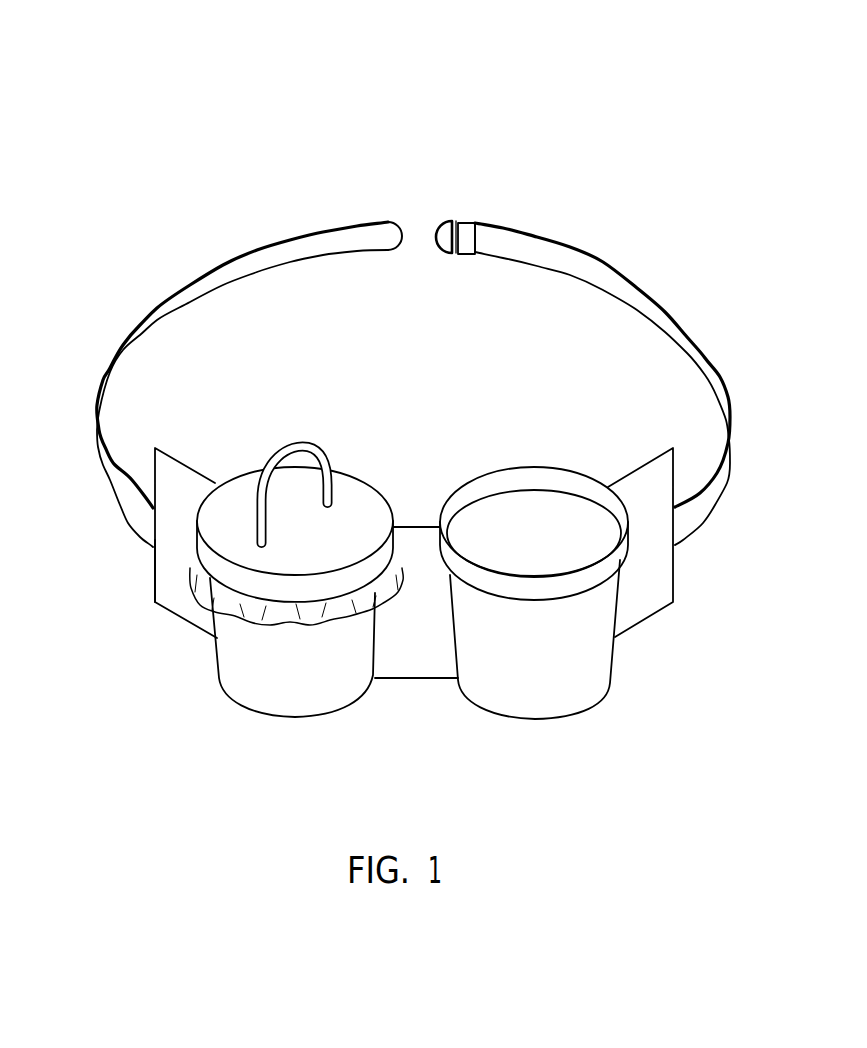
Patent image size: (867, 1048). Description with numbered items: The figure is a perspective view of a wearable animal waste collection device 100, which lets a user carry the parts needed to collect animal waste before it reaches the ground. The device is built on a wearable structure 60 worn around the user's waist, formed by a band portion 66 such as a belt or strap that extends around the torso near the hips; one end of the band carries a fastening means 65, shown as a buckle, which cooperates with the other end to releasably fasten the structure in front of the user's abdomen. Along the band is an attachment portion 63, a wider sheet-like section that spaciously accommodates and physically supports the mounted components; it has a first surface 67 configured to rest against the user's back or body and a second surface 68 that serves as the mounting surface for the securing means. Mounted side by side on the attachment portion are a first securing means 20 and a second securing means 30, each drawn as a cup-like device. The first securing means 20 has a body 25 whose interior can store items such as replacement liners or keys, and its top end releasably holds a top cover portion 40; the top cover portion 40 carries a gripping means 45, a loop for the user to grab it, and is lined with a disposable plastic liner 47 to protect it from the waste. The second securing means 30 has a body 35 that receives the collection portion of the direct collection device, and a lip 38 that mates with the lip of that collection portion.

The wearable animal waste collection device 100 is at (216, 96).
The wearable structure 60 is at (598, 275).
The band portion 66 is at (272, 253).
The fastening means 65 is at (453, 216).
The first surface 67 is at (193, 472).
The second surface 68 is at (168, 567).
The attachment portion 63 is at (647, 590).
The first securing means 20 is at (288, 672).
The body 25 is at (332, 685).
The top cover portion 40 is at (234, 522).
The gripping means 45 is at (292, 442).
The disposable plastic liner 47 is at (240, 603).
The second securing means 30 is at (543, 677).
The body 35 is at (508, 680).
The lip 38 is at (605, 568).